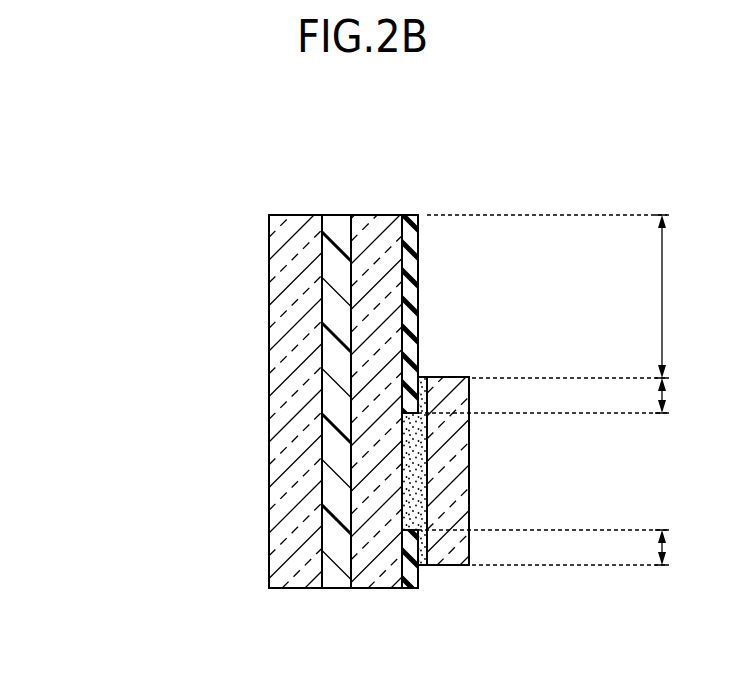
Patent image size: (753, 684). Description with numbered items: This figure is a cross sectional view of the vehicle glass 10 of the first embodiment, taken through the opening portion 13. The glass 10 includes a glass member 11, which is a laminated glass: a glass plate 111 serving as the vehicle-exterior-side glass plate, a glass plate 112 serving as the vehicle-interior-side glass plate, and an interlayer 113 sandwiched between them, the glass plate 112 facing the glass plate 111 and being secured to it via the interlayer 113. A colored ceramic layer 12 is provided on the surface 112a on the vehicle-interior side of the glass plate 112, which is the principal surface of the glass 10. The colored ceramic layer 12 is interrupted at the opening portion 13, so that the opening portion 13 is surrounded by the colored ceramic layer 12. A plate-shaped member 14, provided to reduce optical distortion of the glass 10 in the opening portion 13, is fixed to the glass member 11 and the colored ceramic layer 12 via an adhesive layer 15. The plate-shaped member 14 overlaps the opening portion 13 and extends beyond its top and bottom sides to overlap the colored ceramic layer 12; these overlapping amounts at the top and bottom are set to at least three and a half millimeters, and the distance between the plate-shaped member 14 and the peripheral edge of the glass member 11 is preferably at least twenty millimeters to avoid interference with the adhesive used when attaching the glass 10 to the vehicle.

The glass 10 is at (56, 151).
The glass member 11 is at (405, 140).
The glass plate 111 is at (289, 226).
The interlayer 113 is at (336, 226).
The glass plate 112 is at (385, 226).
The surface 112a is at (403, 267).
The colored ceramic layer 12 is at (414, 226).
The opening portion 13 is at (408, 470).
The plate-shaped member 14 is at (450, 550).
The adhesive layer 15 is at (422, 550).